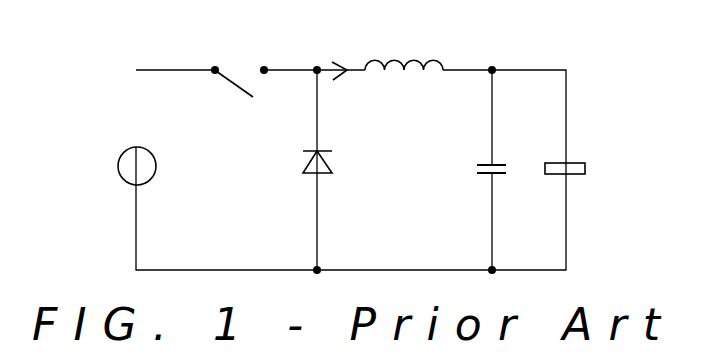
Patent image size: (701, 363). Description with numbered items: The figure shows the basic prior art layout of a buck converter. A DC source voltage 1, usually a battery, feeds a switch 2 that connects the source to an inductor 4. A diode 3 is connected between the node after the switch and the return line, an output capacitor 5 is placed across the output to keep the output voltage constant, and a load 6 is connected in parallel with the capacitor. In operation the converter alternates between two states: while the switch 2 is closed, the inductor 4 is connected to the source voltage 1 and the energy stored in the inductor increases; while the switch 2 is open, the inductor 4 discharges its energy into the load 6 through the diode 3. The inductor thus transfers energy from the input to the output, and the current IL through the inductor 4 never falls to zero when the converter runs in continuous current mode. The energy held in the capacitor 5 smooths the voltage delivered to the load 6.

The source voltage 1 is at (118, 163).
The switch 2 is at (250, 80).
The diode 3 is at (328, 165).
The inductor 4 is at (404, 58).
The output capacitor 5 is at (483, 160).
The load 6 is at (574, 162).
The inductor current IL is at (325, 62).